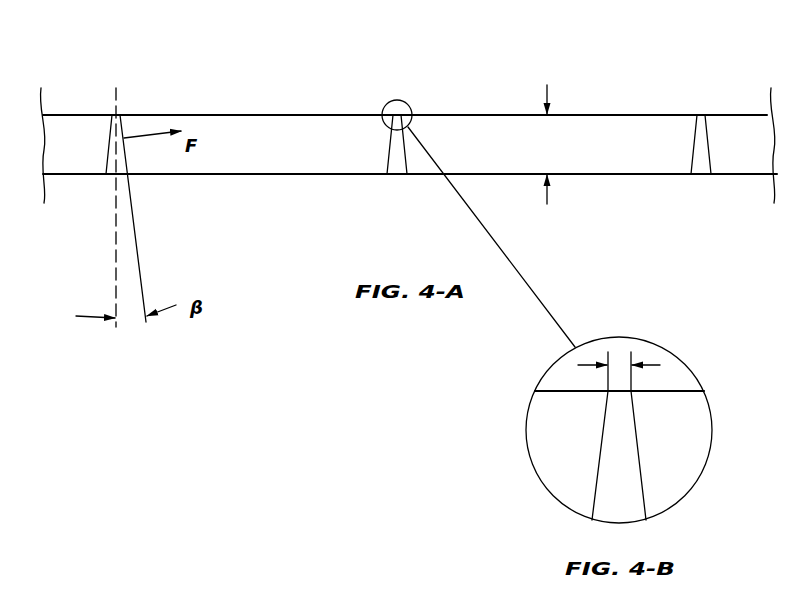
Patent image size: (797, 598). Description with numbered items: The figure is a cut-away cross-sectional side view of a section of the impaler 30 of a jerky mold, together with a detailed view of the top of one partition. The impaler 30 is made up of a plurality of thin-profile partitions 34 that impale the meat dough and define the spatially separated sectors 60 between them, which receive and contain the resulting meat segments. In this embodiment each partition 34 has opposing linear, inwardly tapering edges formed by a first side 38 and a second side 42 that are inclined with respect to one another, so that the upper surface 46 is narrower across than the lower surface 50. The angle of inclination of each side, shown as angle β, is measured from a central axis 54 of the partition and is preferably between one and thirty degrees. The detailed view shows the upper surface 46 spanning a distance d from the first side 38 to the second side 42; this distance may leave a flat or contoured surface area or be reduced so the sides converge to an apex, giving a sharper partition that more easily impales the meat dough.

In FIG. 4-A, the impaler 30 is at (237, 112).
In FIG. 4-A, the partition 34 is at (121, 130).
In FIG. 4-B, the partition 34 is at (622, 456).
In FIG. 4-A, the first side 38 is at (108, 145).
In FIG. 4-B, the first side 38 is at (599, 446).
In FIG. 4-A, the second side 42 is at (124, 150).
In FIG. 4-B, the second side 42 is at (645, 497).
In FIG. 4-B, the upper surface 46 is at (618, 386).
In FIG. 4-A, the lower surface 50 is at (700, 175).
In FIG. 4-A, the central axis 54 is at (115, 293).
In FIG. 4-A, the sector 60 is at (575, 127).